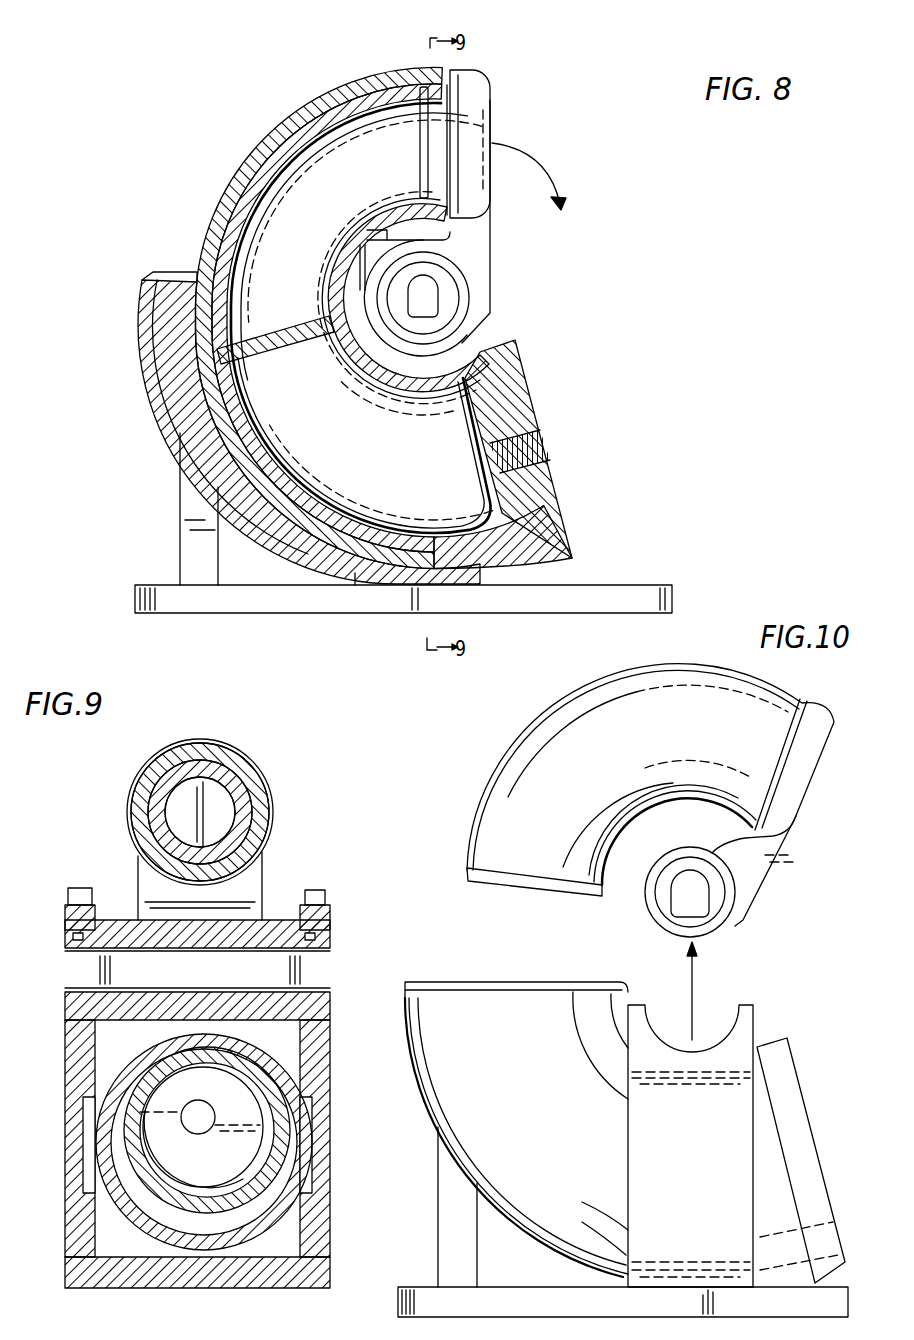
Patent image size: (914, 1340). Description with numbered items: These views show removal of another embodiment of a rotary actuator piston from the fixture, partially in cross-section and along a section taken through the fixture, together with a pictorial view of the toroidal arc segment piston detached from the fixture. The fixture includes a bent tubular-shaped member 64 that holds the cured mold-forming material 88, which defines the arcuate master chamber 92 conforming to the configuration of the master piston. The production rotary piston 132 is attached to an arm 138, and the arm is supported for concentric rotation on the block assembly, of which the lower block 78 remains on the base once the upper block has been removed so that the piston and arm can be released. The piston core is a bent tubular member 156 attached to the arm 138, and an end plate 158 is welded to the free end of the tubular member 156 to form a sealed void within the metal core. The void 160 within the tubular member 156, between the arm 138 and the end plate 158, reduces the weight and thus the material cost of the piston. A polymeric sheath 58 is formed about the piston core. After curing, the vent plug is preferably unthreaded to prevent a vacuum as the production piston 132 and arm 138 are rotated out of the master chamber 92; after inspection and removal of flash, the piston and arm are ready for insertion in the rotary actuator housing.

In FIG. 8, the polymeric sheath 58 is at (310, 105).
In FIG. 8, the bent tubular member 156 is at (257, 177).
In FIG. 9, the bent tubular member 156 is at (233, 778).
In FIG. 8, the void 160 is at (293, 276).
In FIG. 9, the void 160 is at (217, 815).
In FIG. 8, the end plate 158 is at (287, 353).
In FIG. 8, the arm 138 is at (480, 258).
In FIG. 10, the arm 138 is at (753, 878).
In FIG. 8, the arcuate master chamber 92 is at (380, 459).
In FIG. 8, the bent tubular-shaped member 64 is at (163, 350).
In FIG. 9, the bent tubular-shaped member 64 is at (300, 1168).
In FIG. 10, the bent tubular-shaped member 64 is at (435, 1077).
In FIG. 8, the mold-forming material 88 is at (190, 398).
In FIG. 9, the mold-forming material 88 is at (112, 1168).
In FIG. 10, the rotary piston 132 is at (563, 720).
In FIG. 10, the lower block 78 is at (743, 1035).